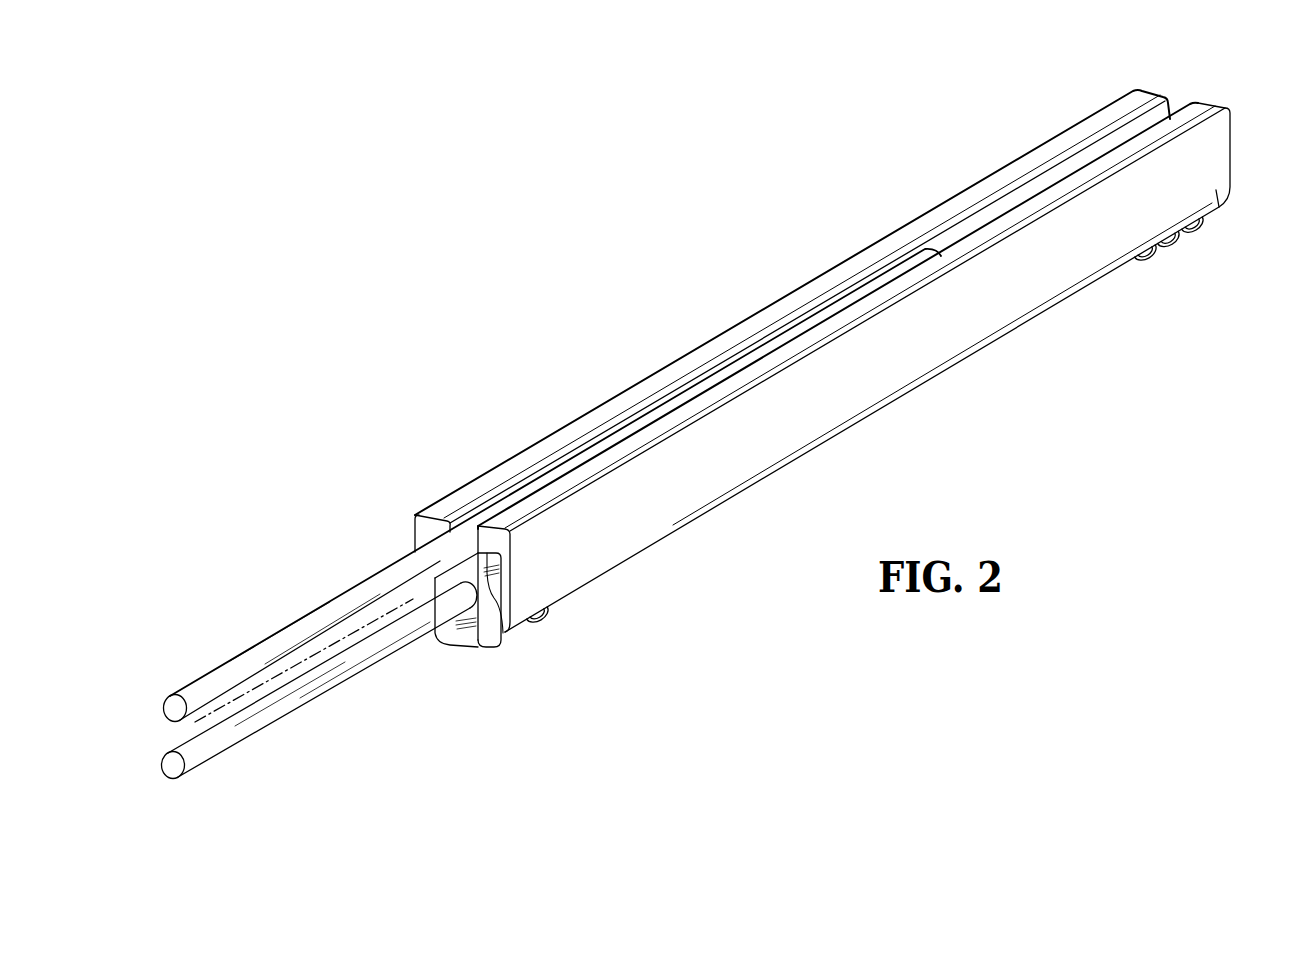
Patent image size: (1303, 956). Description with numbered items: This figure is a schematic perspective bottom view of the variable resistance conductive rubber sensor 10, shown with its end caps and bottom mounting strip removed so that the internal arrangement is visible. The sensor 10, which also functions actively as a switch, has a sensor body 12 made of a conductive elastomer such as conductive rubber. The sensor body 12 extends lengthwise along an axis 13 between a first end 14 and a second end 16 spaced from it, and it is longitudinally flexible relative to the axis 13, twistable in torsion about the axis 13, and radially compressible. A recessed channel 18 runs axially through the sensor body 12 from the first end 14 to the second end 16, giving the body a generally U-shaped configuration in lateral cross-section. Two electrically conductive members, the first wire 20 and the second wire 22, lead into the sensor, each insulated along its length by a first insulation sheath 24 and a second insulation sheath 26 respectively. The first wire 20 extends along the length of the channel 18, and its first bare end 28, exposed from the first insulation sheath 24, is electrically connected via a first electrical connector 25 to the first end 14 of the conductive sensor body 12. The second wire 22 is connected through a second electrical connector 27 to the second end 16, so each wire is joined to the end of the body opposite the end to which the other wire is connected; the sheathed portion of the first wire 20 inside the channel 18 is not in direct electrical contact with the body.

The sensor 10 is at (820, 355).
The sensor body 12 is at (783, 450).
The axis 13 is at (232, 700).
The first end 14 is at (1168, 98).
The second end 16 is at (413, 531).
The recessed channel 18 is at (507, 635).
The first wire 20 is at (181, 690).
The second wire 22 is at (203, 765).
The first insulation sheath 24 is at (292, 627).
The first electrical connector 25 is at (1168, 246).
The second insulation sheath 26 is at (260, 720).
The second electrical connector 27 is at (541, 621).
The first bare end 28 is at (1208, 192).